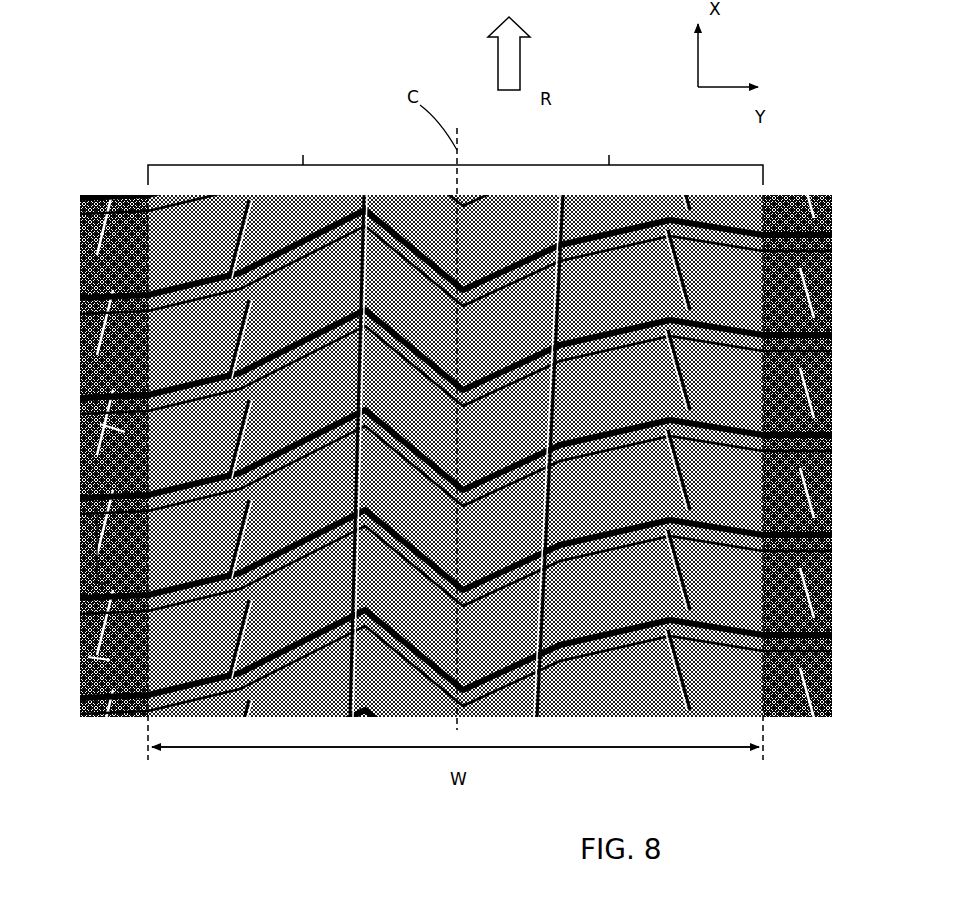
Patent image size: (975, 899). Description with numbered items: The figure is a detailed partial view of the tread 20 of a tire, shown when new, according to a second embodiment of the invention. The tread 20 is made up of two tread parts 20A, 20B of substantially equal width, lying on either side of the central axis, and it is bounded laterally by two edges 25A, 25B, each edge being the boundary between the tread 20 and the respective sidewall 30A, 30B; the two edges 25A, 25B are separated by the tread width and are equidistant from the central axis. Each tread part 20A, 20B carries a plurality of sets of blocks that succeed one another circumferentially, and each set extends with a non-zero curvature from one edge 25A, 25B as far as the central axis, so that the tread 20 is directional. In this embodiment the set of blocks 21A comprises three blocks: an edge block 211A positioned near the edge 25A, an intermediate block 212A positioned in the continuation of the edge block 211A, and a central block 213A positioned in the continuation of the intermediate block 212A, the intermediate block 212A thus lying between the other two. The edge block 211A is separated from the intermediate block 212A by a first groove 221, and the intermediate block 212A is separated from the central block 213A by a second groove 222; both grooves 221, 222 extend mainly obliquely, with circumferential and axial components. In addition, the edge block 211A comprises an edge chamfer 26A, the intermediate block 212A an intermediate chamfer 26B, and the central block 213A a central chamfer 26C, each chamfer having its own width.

The tread 20 is at (441, 429).
The tread part 20A is at (302, 147).
The tread part 20B is at (610, 147).
The sidewall 30A is at (86, 195).
The sidewall 30B is at (823, 195).
The edge 25A is at (148, 752).
The edge 25B is at (763, 752).
The set of blocks 21A is at (97, 553).
The edge block 211A is at (100, 424).
The intermediate block 212A is at (456, 354).
The central block 213A is at (282, 243).
The first groove 221 is at (88, 657).
The second groove 222 is at (240, 328).
The edge chamfer 26A is at (114, 397).
The intermediate chamfer 26B is at (456, 232).
The central chamfer 26C is at (335, 290).